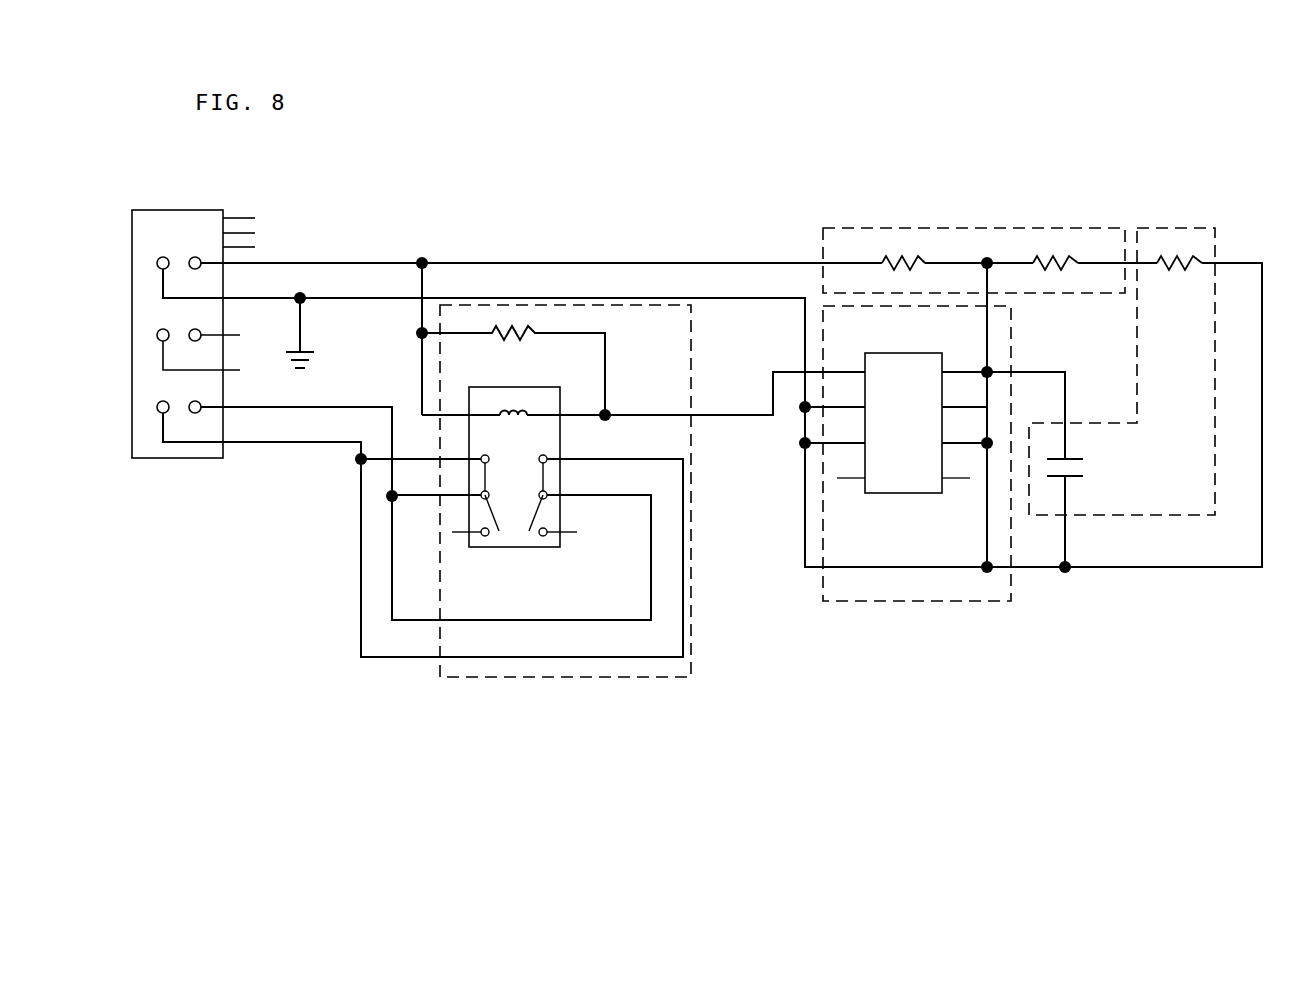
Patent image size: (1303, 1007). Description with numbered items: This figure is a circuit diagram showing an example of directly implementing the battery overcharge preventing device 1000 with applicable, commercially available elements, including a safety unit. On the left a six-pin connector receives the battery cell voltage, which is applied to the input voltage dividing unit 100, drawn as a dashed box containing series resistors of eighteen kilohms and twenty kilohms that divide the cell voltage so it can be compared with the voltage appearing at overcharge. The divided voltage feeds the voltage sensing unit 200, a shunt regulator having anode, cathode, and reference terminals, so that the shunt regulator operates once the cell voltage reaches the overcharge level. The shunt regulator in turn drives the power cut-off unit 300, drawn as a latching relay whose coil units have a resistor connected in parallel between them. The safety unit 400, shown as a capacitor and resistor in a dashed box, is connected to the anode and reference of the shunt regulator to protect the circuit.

The battery overcharge preventing device 1000 is at (671, 122).
The input voltage dividing unit 100 is at (1015, 228).
The voltage sensing unit 200 is at (924, 601).
The power cut-off unit 300 is at (553, 677).
The safety unit 400 is at (1175, 228).